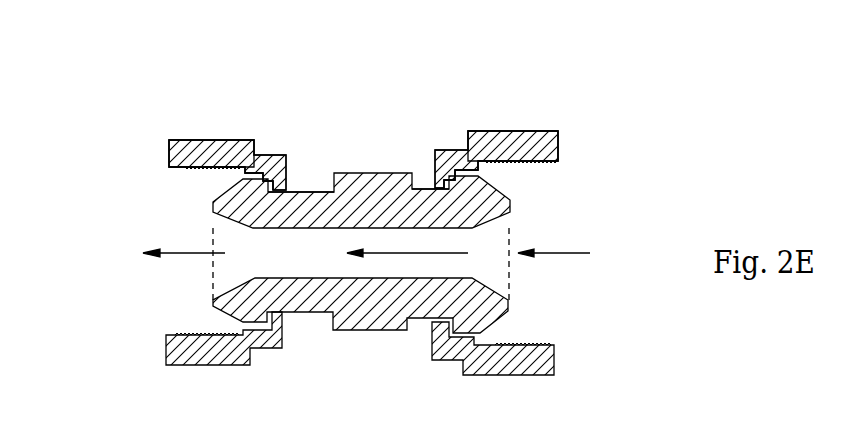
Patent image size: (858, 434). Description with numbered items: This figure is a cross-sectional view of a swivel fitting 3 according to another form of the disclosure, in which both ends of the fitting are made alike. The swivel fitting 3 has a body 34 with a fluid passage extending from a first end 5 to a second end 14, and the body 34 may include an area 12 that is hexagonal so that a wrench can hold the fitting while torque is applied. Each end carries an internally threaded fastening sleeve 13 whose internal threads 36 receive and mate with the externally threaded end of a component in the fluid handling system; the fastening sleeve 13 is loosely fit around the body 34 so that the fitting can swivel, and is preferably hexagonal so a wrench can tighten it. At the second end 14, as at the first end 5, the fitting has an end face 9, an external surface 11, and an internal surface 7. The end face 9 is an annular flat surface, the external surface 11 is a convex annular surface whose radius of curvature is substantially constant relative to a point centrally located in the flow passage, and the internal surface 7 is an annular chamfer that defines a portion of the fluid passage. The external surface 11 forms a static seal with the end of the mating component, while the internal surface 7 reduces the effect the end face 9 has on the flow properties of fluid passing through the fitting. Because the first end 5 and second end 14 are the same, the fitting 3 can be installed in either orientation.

The swivel fitting 3 is at (120, 82).
The second end 14 is at (148, 72).
The first end 5 is at (577, 72).
The internal surface 7 is at (212, 218).
The end face 9 is at (215, 207).
The fastening sleeve 13 is at (203, 167).
The external surface 11 is at (232, 188).
The hexagonal area 12 is at (373, 173).
The body 34 is at (305, 191).
The internal threads 36 is at (208, 335).